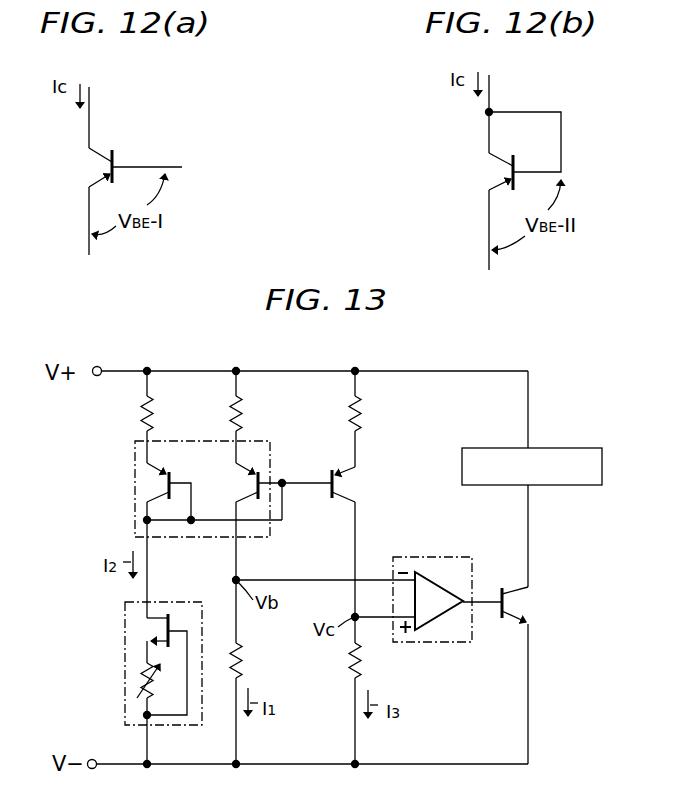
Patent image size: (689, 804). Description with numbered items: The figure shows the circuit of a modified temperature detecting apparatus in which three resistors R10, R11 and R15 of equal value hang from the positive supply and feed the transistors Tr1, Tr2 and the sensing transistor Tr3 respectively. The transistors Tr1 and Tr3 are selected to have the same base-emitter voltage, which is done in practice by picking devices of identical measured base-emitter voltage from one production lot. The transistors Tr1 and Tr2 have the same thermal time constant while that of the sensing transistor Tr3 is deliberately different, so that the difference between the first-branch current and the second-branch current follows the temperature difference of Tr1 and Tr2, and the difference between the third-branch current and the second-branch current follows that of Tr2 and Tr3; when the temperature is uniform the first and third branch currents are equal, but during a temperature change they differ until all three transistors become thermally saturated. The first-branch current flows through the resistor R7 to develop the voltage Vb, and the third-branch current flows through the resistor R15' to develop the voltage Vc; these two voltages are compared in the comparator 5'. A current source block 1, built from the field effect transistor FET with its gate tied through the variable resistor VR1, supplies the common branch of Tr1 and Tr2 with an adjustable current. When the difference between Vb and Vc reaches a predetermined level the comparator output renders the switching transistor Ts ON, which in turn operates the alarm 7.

The alarm 7 is at (580, 486).
The comparator 5' is at (432, 626).
The constant current source (FET and variable resistor VR1) 1 is at (125, 620).
The resistor R11 is at (151, 401).
The resistor R10 is at (240, 401).
The resistor R15 is at (376, 419).
The resistor R7 is at (243, 667).
The resistor R15' is at (382, 703).
The transistor Tr1 is at (253, 470).
The transistor Tr2 is at (158, 470).
The sensing transistor Tr3 is at (349, 478).
The switching transistor Ts is at (515, 596).
The field effect transistor FET is at (158, 617).
The variable resistor VR1 is at (137, 681).